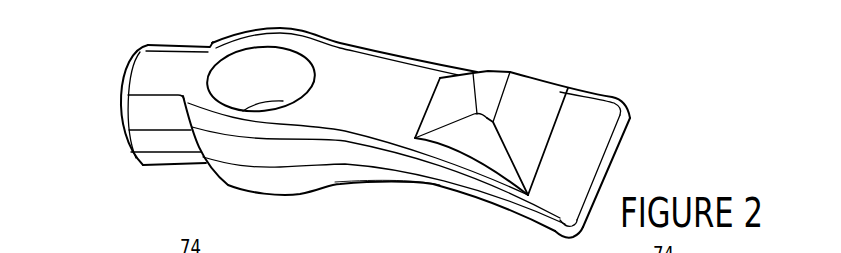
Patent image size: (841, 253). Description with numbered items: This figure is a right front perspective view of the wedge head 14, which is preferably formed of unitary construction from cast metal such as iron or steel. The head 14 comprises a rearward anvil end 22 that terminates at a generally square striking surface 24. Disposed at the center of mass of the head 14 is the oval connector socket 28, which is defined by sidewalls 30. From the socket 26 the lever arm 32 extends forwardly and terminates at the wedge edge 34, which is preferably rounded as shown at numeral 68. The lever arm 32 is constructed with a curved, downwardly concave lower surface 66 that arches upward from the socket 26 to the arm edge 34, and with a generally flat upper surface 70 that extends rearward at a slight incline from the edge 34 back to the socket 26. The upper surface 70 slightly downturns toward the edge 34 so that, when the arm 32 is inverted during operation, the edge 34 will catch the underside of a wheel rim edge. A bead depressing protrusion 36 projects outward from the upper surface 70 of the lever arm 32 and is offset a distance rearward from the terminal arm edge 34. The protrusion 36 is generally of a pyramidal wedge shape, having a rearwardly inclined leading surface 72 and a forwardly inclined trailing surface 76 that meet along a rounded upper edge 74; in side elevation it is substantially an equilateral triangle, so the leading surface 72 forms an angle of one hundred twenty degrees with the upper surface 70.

The wedge head 14 is at (134, 182).
The rearward anvil end 22 is at (173, 35).
The striking surface 24 is at (118, 115).
The socket 26 is at (283, 197).
The oval connector socket 28 is at (252, 70).
The sidewalls 30 is at (309, 83).
The lever arm 32 is at (387, 79).
The wedge edge 34 is at (620, 154).
The bead depressing protrusion 36 is at (540, 76).
The lower surface 66 is at (433, 188).
The rounded arm edge 68 is at (620, 130).
The upper surface 70 is at (597, 125).
The leading surface 72 is at (528, 113).
The rounded upper edge 74 is at (500, 77).
The trailing surface 76 is at (470, 88).